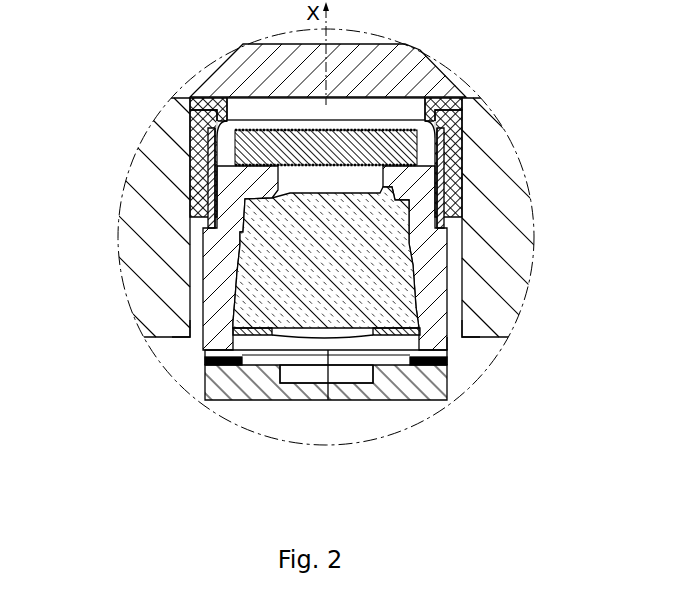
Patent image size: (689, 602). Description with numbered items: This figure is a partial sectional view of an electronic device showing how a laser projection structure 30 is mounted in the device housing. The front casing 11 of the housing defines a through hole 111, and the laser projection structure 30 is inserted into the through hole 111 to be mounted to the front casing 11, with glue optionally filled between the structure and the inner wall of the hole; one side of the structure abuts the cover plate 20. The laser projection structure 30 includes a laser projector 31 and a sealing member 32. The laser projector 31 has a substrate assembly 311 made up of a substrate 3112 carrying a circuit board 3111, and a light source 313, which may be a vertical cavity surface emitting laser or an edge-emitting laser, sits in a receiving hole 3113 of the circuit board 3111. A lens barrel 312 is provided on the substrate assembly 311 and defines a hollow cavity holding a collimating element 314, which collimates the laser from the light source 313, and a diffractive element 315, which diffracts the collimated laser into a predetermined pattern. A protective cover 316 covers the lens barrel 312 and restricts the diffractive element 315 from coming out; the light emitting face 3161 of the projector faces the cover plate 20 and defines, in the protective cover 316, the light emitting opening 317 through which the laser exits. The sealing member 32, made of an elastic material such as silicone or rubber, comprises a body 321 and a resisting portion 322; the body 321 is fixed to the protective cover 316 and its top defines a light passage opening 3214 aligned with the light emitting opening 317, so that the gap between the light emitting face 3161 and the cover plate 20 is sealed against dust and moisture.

The front casing 11 is at (150, 314).
The through hole 111 is at (197, 334).
The cover plate 20 is at (402, 68).
The laser projection structure 30 is at (78, 165).
The laser projector 31 is at (365, 177).
The substrate assembly 311 is at (361, 431).
The circuit board 3111 is at (266, 396).
The substrate 3112 is at (211, 396).
The receiving hole 3113 is at (366, 377).
The lens barrel 312 is at (455, 346).
The light source 313 is at (327, 402).
The collimating element 314 is at (413, 282).
The diffractive element 315 is at (463, 167).
The protective cover 316 is at (450, 203).
The light emitting face 3161 is at (246, 97).
The light emitting opening 317 is at (263, 120).
The sealing member 32 is at (334, 114).
The body 321 is at (190, 146).
The light passage opening 3214 is at (350, 113).
The resisting portion 322 is at (188, 98).